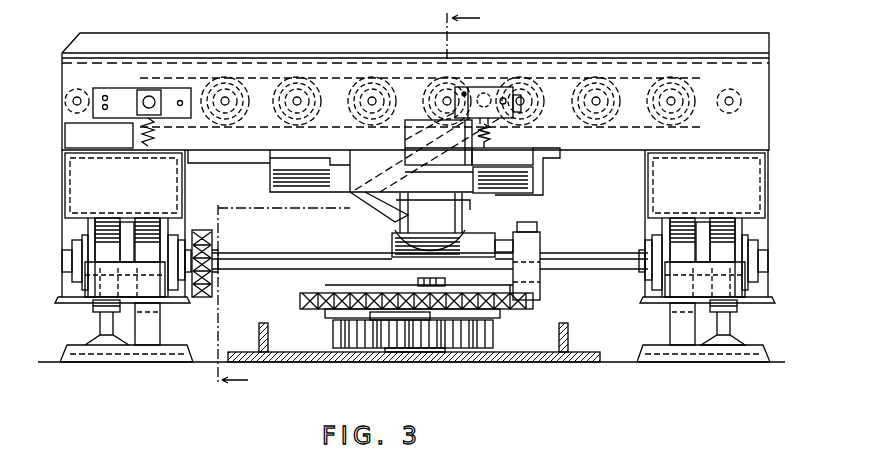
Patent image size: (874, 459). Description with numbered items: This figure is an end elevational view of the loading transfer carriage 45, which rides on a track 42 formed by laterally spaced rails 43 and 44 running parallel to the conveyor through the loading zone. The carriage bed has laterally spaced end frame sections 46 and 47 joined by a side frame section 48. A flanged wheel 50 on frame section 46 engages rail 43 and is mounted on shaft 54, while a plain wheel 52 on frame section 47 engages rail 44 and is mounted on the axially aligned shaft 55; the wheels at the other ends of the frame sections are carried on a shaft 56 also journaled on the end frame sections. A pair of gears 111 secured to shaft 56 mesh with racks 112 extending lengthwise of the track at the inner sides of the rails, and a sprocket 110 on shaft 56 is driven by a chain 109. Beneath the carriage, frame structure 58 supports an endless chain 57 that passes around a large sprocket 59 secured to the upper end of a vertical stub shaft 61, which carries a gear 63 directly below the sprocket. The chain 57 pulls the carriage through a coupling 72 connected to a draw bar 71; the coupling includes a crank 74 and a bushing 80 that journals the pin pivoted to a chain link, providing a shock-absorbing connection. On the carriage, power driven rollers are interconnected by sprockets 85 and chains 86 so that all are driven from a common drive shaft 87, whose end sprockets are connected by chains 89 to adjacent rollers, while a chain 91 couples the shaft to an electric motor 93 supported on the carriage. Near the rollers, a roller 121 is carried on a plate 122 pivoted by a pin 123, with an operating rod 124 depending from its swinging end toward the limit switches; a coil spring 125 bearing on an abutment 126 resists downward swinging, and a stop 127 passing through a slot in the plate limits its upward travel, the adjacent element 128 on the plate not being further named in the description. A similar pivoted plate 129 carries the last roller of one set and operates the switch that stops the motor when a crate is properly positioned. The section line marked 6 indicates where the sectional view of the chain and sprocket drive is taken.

The loading carriage 45 is at (380, 22).
The side frame section 48 is at (70, 80).
The pivoted plate 129 is at (122, 88).
The chains 86 is at (228, 125).
The sprockets 85 is at (262, 122).
The drive shaft 87 is at (358, 168).
The stop 127 is at (440, 102).
The chains 89 is at (330, 165).
The roller 121 is at (507, 95).
The plate 122 is at (490, 88).
The pin 123 is at (521, 100).
The pin 128 is at (465, 90).
The coil spring 125 is at (493, 128).
The operating rod 124 is at (438, 142).
The abutment 126 is at (502, 156).
The draw bar 71 is at (533, 179).
The chain 91 is at (382, 208).
The electric motor 93 is at (476, 240).
The crank 74 is at (392, 243).
The shaft 56 is at (315, 258).
The coupling 72 is at (540, 243).
The bushing 80 is at (532, 288).
The vertical stub shaft 61 is at (445, 282).
The endless chain 57 is at (300, 300).
The sprocket 59 is at (322, 320).
The gear 63 is at (404, 350).
The frame structure 58 is at (575, 340).
The end frame section 46 is at (65, 205).
The flanged wheel 50 is at (102, 222).
The shaft 54 is at (130, 226).
The gears 111 is at (155, 225).
The chain 109 is at (200, 230).
The sprocket 110 is at (212, 232).
The racks 112 is at (156, 335).
The track 42 is at (95, 329).
The rail 43 is at (110, 345).
The end frame section 47 is at (766, 215).
The shaft 55 is at (702, 235).
The plain wheel 52 is at (726, 228).
The rail 44 is at (730, 327).
The section line 6 is at (350, 201).